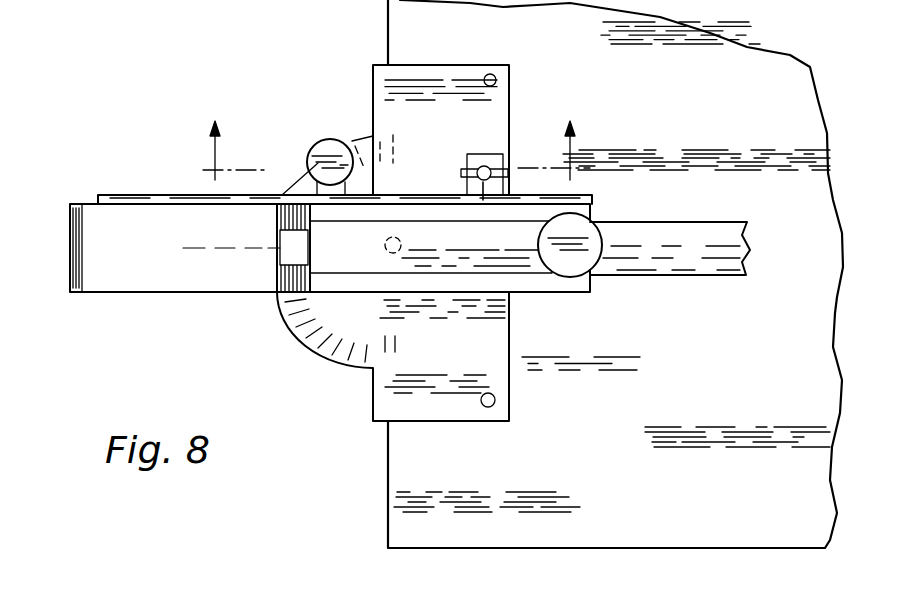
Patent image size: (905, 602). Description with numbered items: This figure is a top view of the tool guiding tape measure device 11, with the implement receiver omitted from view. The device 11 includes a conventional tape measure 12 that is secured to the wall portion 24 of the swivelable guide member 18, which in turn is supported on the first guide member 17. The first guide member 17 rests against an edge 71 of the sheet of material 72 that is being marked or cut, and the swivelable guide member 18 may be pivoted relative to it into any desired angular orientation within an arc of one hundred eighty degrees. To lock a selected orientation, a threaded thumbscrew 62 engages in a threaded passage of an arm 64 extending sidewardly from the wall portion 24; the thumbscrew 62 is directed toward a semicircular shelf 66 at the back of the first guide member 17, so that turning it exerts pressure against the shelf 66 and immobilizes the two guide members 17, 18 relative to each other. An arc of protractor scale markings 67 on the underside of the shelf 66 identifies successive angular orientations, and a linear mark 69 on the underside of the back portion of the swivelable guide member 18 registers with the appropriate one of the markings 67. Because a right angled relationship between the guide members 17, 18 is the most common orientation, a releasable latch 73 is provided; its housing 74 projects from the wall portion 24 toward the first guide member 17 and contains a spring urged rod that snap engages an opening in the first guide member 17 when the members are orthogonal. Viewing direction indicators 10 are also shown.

The viewing direction arrows 10 is at (396, 137).
The tool guiding tape measure device 11 is at (262, 38).
The tape measure 12 is at (132, 317).
The first guide member 17 is at (425, 422).
The swivelable guide member 18 is at (532, 294).
The wall portion 24 is at (150, 195).
The threaded thumbscrew 62 is at (327, 138).
The arm 64 is at (313, 183).
The semicircular shelf 66 is at (293, 328).
The protractor scale markings 67 is at (410, 345).
The linear mark 69 is at (205, 250).
The edge 71 is at (387, 25).
The sheet of material 72 is at (783, 528).
The releasable latch 73 is at (480, 154).
The housing 74 is at (483, 200).